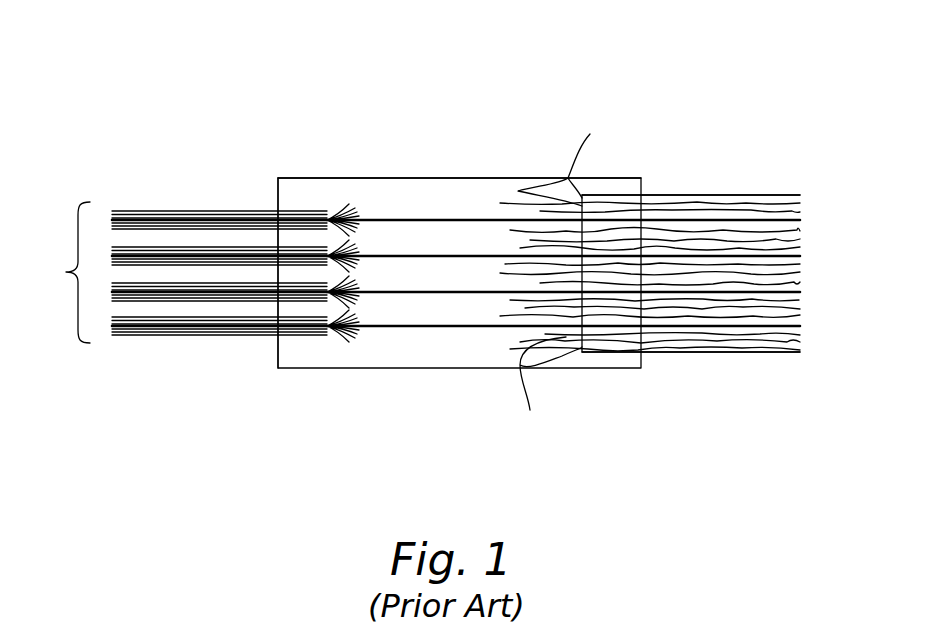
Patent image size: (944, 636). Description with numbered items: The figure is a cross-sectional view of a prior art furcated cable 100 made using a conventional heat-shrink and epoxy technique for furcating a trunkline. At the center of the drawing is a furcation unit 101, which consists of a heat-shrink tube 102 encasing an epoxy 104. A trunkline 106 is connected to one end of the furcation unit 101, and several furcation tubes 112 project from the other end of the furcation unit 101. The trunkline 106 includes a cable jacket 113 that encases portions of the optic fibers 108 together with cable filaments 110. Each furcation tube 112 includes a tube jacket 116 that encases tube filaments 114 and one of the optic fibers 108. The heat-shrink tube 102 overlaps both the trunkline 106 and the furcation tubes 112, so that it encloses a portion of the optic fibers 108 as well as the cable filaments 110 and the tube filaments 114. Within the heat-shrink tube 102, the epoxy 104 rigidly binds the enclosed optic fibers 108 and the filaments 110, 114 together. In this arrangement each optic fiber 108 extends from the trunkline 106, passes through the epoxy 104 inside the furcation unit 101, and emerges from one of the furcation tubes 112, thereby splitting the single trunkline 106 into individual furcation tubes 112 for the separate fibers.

The furcated cable 100 is at (600, 70).
The furcation unit 101 is at (367, 369).
The heat-shrink tube 102 is at (355, 178).
The epoxy 104 is at (438, 191).
The trunkline 106 is at (721, 371).
The optic fibers 108 is at (770, 326).
The cable filaments 110 is at (569, 277).
The furcation tubes 112 is at (64, 272).
The cable jacket 113 is at (710, 194).
The tube filaments 114 is at (324, 205).
The tube jacket 116 is at (130, 207).